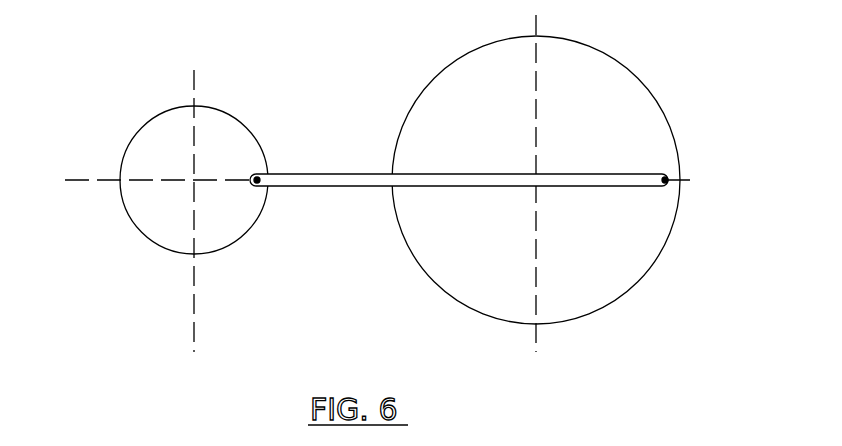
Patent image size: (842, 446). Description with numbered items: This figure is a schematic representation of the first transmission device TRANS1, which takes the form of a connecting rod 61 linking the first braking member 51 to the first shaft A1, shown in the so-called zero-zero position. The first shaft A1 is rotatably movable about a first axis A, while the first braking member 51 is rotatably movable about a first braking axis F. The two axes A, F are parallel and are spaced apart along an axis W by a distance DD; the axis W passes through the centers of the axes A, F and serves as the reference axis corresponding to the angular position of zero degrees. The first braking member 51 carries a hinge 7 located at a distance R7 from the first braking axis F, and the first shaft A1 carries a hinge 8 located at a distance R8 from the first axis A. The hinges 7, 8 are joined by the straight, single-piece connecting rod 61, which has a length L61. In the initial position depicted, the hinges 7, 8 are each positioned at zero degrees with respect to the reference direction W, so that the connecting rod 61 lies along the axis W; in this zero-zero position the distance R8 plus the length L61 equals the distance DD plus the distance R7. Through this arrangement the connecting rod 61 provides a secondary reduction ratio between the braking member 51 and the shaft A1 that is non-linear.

The first shaft A1 is at (131, 224).
The first braking member 51 is at (420, 267).
The connecting rod 61 is at (360, 173).
The hinge 8 is at (262, 171).
The hinge 7 is at (665, 180).
The first transmission device TRANS1 is at (380, 151).
The distance R8 is at (249, 167).
The distance R7 is at (536, 164).
The length L61 is at (657, 220).
The distance DD is at (528, 338).
The first axis A is at (209, 206).
The first braking axis F is at (550, 204).
The axis W is at (722, 181).